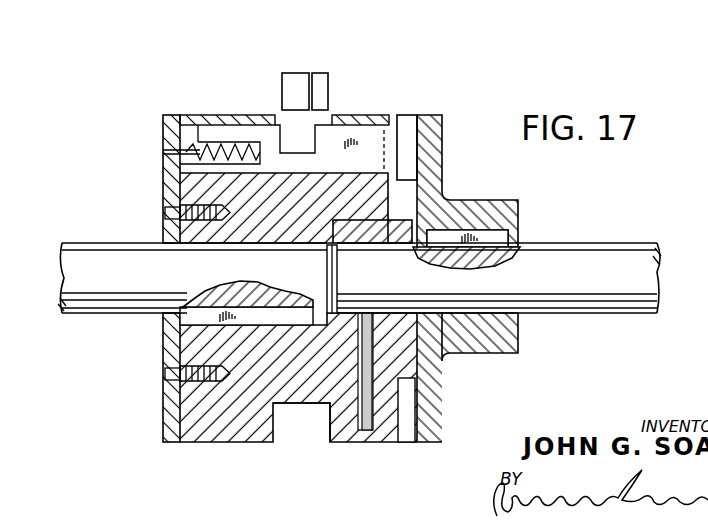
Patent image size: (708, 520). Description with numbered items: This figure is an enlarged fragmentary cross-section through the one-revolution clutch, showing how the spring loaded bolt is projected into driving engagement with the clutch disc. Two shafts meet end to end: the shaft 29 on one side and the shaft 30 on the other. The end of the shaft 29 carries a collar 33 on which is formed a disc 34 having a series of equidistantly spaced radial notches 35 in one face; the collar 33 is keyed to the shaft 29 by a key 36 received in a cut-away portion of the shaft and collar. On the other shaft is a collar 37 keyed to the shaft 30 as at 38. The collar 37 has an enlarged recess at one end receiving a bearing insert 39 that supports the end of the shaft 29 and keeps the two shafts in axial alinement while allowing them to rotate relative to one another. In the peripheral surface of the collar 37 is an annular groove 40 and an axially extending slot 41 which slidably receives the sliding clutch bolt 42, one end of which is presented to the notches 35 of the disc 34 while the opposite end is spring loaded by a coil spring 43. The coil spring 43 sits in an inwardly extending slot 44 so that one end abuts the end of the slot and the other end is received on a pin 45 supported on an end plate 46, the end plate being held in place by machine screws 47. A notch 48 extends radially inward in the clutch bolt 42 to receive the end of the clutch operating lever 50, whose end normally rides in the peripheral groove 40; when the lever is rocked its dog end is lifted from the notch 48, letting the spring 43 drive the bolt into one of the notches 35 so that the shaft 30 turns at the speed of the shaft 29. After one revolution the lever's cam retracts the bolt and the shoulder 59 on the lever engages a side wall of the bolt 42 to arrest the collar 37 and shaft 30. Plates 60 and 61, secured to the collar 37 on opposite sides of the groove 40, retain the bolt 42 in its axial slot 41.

The shaft 29 is at (620, 303).
The shaft 30 is at (115, 300).
The collar 33 is at (479, 213).
The disc 34 is at (433, 148).
The radial notches 35 is at (408, 427).
The key 36 is at (500, 239).
The collar 37 is at (240, 427).
The key 38 is at (185, 322).
The bearing insert 39 is at (352, 323).
The annular groove 40 is at (276, 425).
The axially extending slot 41 is at (318, 182).
The sliding clutch bolt 42 is at (361, 132).
The coil spring 43 is at (227, 142).
The inwardly extending slot 44 is at (247, 142).
The pin 45 is at (166, 170).
The end plate 46 is at (166, 132).
The machine screws 47 is at (166, 212).
The notch 48 is at (335, 122).
The clutch operating lever 50 is at (302, 72).
The shoulder 59 is at (323, 90).
The plate 60 is at (208, 115).
The plate 61 is at (390, 116).